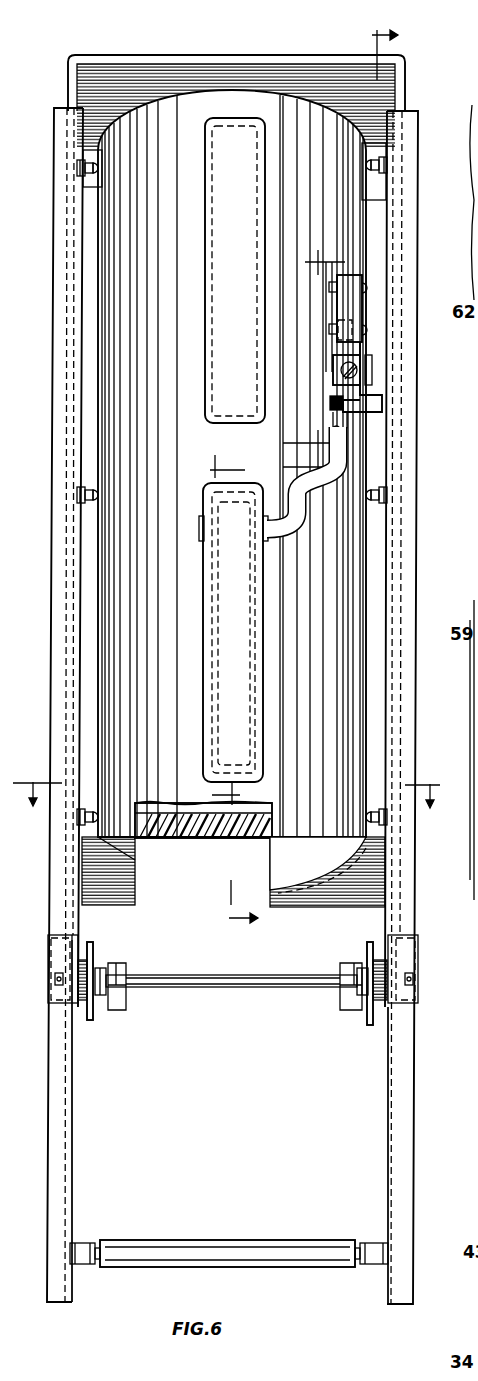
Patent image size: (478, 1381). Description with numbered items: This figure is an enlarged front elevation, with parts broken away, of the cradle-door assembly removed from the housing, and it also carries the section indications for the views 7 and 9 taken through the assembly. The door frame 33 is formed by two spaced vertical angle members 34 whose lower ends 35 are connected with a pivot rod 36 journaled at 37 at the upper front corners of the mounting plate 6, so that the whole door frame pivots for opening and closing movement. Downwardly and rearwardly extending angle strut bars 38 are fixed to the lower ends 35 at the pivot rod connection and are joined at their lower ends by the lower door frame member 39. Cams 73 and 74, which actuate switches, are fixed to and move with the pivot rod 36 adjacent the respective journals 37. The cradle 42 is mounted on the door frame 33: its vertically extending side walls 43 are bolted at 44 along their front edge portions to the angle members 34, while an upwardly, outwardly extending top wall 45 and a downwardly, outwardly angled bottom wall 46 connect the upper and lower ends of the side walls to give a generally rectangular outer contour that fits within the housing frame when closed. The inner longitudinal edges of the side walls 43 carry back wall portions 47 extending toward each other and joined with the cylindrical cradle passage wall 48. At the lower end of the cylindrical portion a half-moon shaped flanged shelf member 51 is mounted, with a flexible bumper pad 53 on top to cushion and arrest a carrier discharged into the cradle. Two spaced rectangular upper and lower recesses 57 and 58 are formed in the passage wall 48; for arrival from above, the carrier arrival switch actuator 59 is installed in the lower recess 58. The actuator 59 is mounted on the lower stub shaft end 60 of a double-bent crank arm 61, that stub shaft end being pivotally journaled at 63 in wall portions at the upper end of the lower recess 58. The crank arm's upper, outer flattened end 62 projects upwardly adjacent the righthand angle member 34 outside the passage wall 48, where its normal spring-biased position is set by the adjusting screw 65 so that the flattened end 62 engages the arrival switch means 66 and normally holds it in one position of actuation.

The mounting plate 6 is at (92, 1020).
The section line 7- 7 is at (307, 477).
The section line 9- 9 is at (226, 786).
The door frame 33 is at (47, 237).
The vertical angle members 34 is at (58, 608).
The lower ends 35 is at (58, 955).
The pivot rod 36 is at (193, 985).
The journals 37 is at (98, 968).
The angle strut bars 38 is at (57, 1138).
The lower door frame member 39 is at (222, 1252).
The cradle 42 is at (231, 50).
The cradle side walls 43 is at (405, 98).
The bolts 44 is at (80, 495).
The top wall 45 is at (123, 88).
The bottom wall 46 is at (348, 877).
The back wall portions 47 is at (90, 712).
The cylindrical cradle passage wall 48 is at (190, 443).
The flanged shelf member 51 is at (207, 838).
The flexible bumper pad 53 is at (250, 805).
The upper recess 57 is at (238, 213).
The lower recess 58 is at (230, 642).
The carrier arrival switch actuator 59 is at (212, 688).
The lower stub shaft end 60 is at (273, 525).
The double-bent crank arm 61 is at (340, 448).
The flattened end 62 is at (333, 348).
The journal 63 is at (203, 530).
The adjusting screw 65 is at (358, 376).
The arrival switch means 66 is at (352, 301).
The cam 73 is at (117, 1010).
The cam 74 is at (355, 1010).